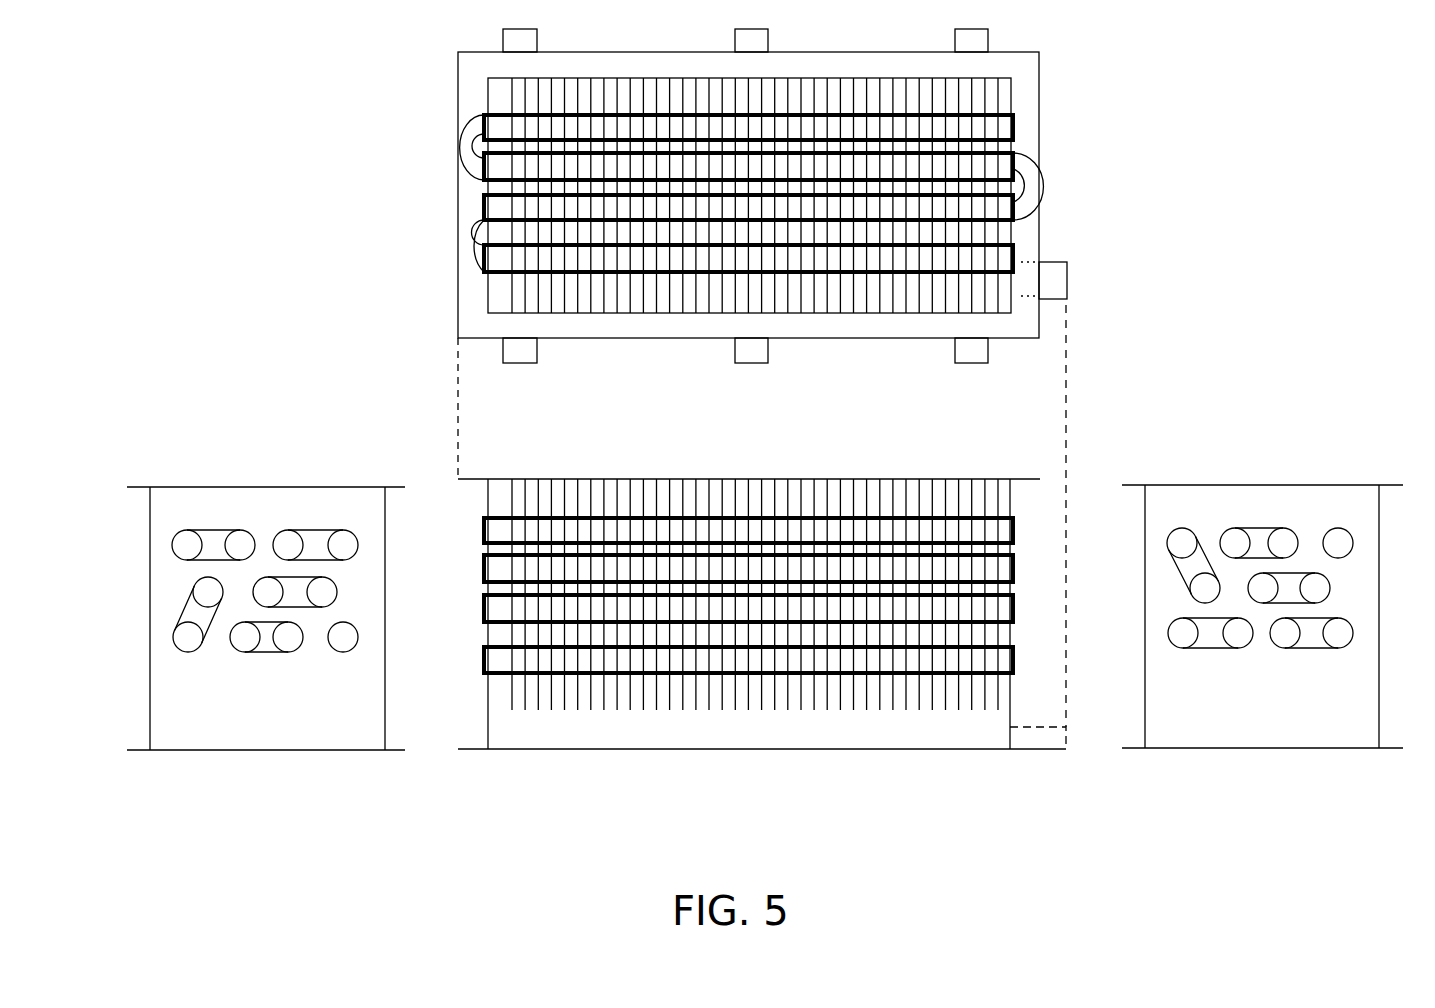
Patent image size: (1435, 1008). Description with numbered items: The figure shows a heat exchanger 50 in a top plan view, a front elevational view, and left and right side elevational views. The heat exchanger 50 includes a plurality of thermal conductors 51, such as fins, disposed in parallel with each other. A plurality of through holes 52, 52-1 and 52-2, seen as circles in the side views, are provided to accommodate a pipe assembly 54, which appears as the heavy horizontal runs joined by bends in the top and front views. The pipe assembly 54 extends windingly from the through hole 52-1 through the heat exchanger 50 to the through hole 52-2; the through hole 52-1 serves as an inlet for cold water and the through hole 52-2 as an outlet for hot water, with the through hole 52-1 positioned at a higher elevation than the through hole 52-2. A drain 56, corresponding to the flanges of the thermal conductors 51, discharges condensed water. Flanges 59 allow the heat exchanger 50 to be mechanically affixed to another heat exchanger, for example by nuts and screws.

The heat exchanger 50 is at (1222, 138).
The thermal conductors 51 is at (513, 693).
The through holes 52 is at (283, 532).
The through hole 52-1 is at (1345, 527).
The through hole 52-2 is at (338, 650).
The pipe assembly 54 is at (498, 115).
The drain 56 is at (1067, 272).
The flanges 59 is at (537, 353).